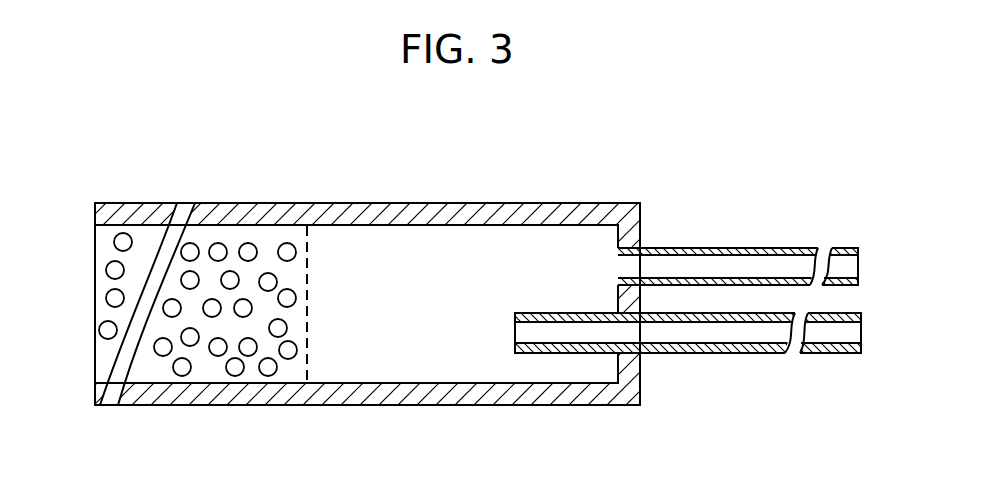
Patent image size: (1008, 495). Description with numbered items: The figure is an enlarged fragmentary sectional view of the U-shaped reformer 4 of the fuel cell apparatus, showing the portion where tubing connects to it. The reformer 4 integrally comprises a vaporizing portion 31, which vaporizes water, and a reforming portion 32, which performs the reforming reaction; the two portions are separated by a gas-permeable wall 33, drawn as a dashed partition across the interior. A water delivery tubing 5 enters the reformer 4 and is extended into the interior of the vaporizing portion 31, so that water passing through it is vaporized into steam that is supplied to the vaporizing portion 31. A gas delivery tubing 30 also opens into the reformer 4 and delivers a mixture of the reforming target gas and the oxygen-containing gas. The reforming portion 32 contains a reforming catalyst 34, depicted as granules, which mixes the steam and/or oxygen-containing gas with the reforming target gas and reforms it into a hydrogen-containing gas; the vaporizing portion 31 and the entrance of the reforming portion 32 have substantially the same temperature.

The reformer 4 is at (548, 168).
The water delivery tubing 5 is at (735, 354).
The gas delivery tubing 30 is at (735, 248).
The vaporizing portion 31 is at (369, 240).
The reforming portion 32 is at (233, 238).
The gas-permeable wall 33 is at (308, 363).
The reforming catalyst 34 is at (163, 356).